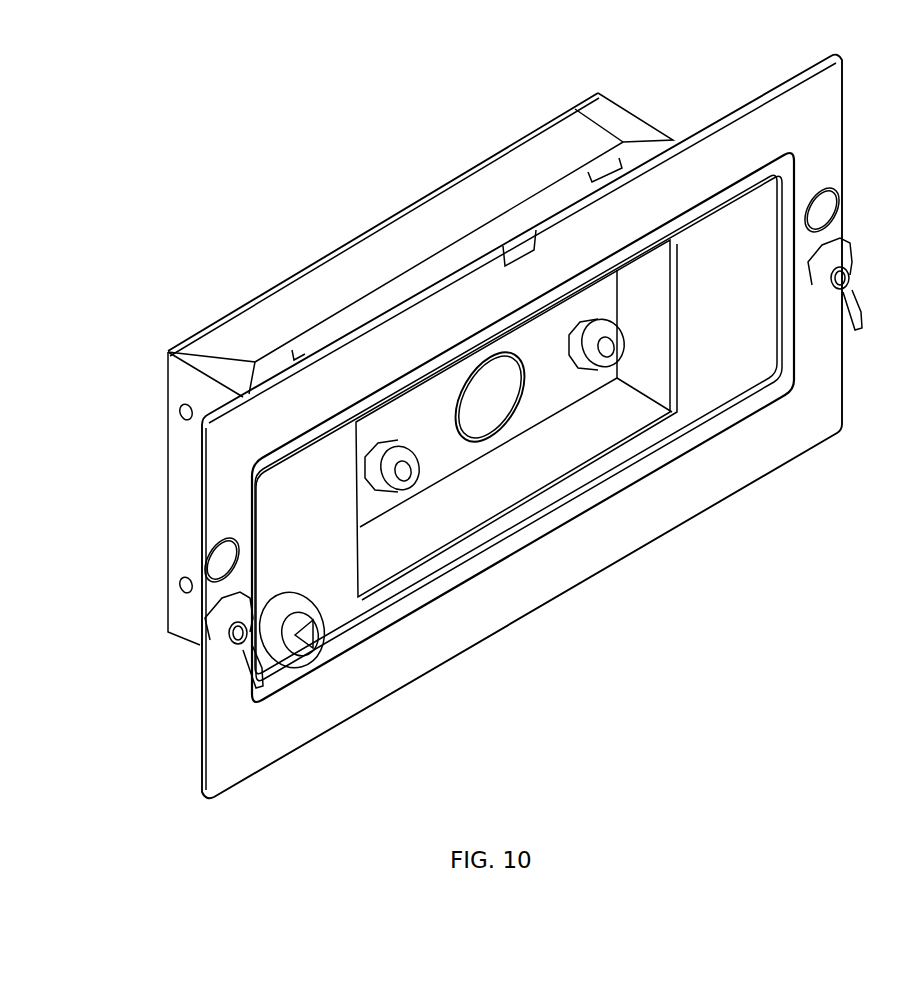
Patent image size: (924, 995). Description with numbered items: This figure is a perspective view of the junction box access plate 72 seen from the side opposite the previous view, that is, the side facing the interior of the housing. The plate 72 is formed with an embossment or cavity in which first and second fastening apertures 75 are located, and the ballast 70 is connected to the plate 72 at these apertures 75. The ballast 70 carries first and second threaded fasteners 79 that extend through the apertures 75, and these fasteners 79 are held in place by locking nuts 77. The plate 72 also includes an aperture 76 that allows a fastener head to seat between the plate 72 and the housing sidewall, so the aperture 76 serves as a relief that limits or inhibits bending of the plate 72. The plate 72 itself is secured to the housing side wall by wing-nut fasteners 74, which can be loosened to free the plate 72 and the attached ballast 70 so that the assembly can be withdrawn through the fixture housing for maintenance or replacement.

The ballast 70 is at (370, 254).
The access plate 72 is at (725, 475).
The wing-nut fastener 74 is at (865, 270).
The fastening apertures 75 is at (634, 318).
The aperture 76 is at (823, 192).
The locking nuts 77 is at (596, 375).
The fasteners 79 is at (610, 347).